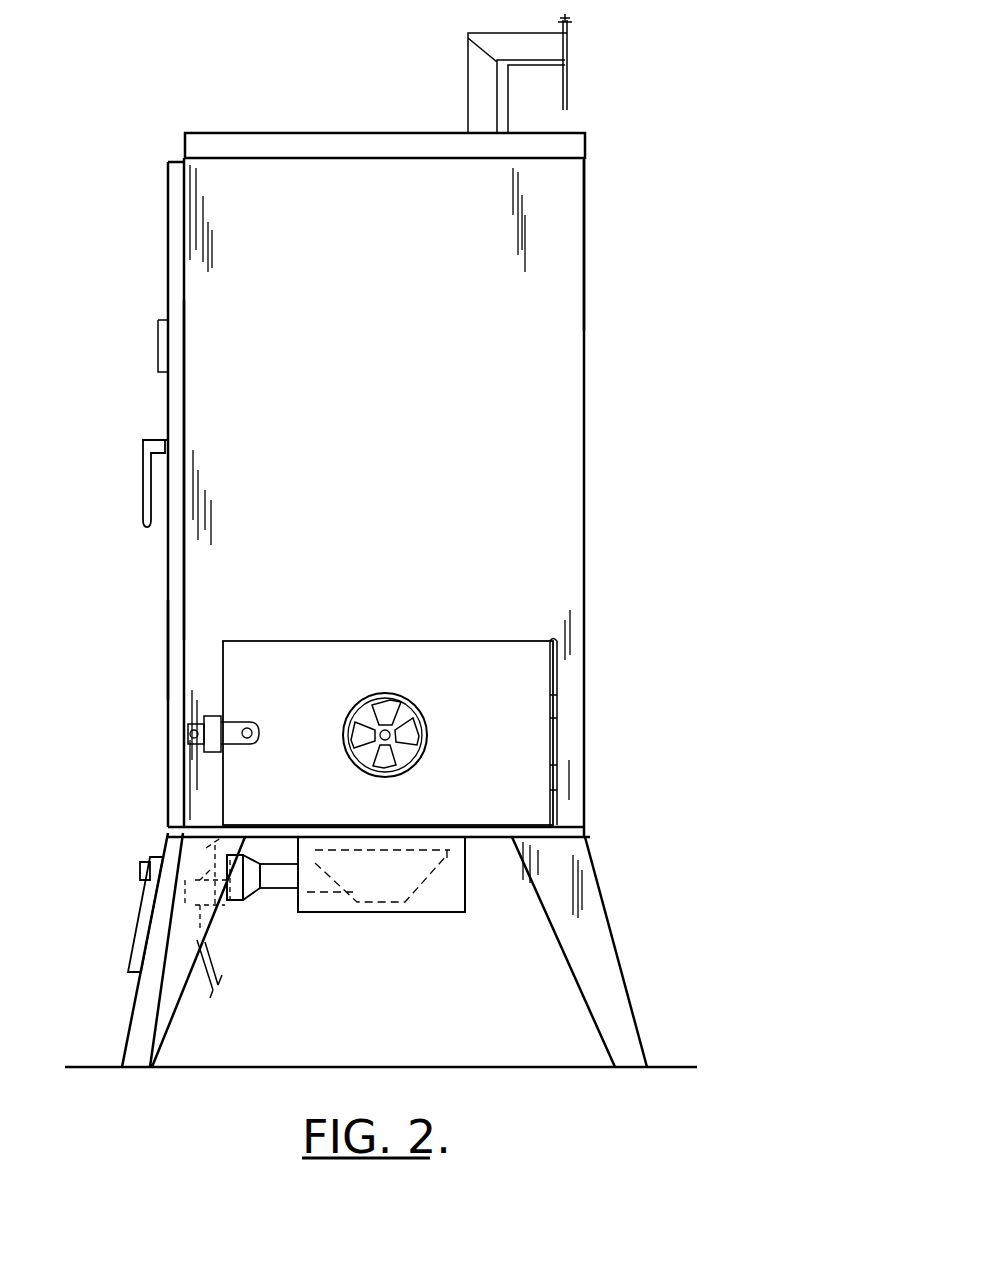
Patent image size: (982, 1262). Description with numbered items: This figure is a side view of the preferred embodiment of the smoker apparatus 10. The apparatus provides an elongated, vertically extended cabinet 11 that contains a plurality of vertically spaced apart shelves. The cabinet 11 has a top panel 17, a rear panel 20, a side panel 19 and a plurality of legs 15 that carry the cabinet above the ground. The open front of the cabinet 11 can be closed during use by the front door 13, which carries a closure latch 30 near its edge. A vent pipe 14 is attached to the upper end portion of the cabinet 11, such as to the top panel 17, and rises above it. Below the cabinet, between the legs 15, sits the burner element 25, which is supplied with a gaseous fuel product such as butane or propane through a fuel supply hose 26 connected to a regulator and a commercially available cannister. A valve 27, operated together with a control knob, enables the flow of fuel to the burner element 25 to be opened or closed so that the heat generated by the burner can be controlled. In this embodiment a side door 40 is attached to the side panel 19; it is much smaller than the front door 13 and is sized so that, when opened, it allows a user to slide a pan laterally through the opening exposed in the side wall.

The smoker apparatus 10 is at (286, 84).
The cabinet 11 is at (586, 402).
The front door 13 is at (167, 645).
The vent pipe 14 is at (484, 72).
The legs 15 is at (150, 1000).
The top panel 17 is at (386, 147).
The side panel 19 is at (400, 546).
The rear panel 20 is at (586, 322).
The burner element 25 is at (277, 878).
The fuel supply hose 26 is at (208, 963).
The valve 27 is at (155, 855).
The closure latch 30 is at (147, 473).
The side door 40 is at (320, 697).